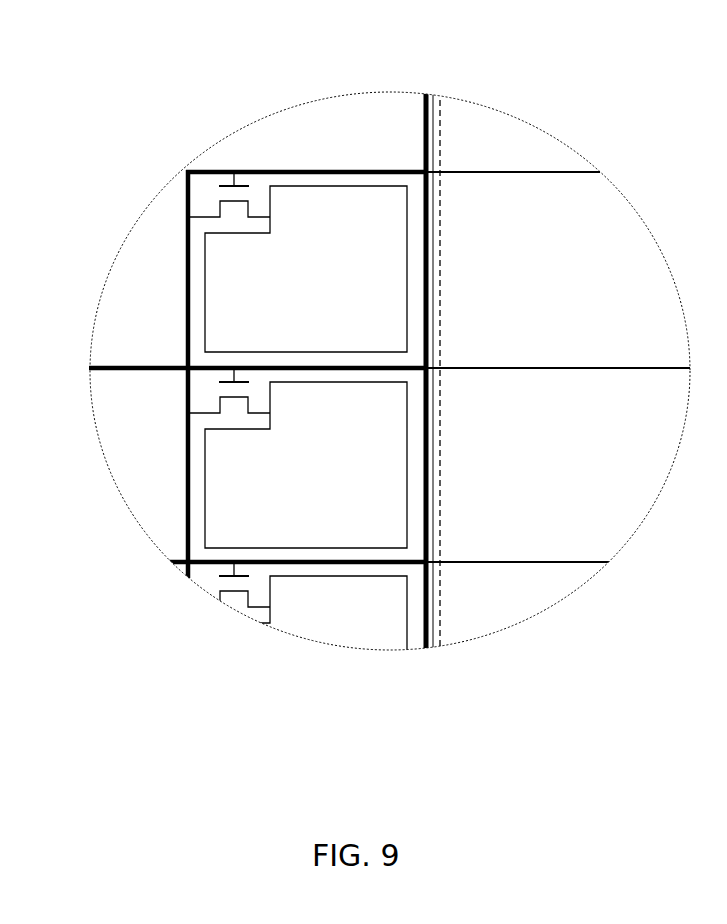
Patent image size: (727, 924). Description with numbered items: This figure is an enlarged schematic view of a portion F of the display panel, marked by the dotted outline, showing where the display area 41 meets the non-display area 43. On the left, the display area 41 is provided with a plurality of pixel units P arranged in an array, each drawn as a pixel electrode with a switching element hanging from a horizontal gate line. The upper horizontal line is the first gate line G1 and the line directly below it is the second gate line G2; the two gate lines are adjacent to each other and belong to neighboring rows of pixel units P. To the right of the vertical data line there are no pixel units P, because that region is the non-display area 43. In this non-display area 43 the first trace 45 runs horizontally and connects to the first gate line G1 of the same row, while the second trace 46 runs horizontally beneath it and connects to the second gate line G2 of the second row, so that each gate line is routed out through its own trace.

The display area 41 is at (300, 130).
The non-display area 43 is at (530, 142).
The first trace 45 is at (497, 174).
The second trace 46 is at (530, 370).
The portion F is at (150, 203).
The first gate line G1 is at (263, 170).
The second gate line G2 is at (143, 365).
The pixel unit P is at (232, 478).